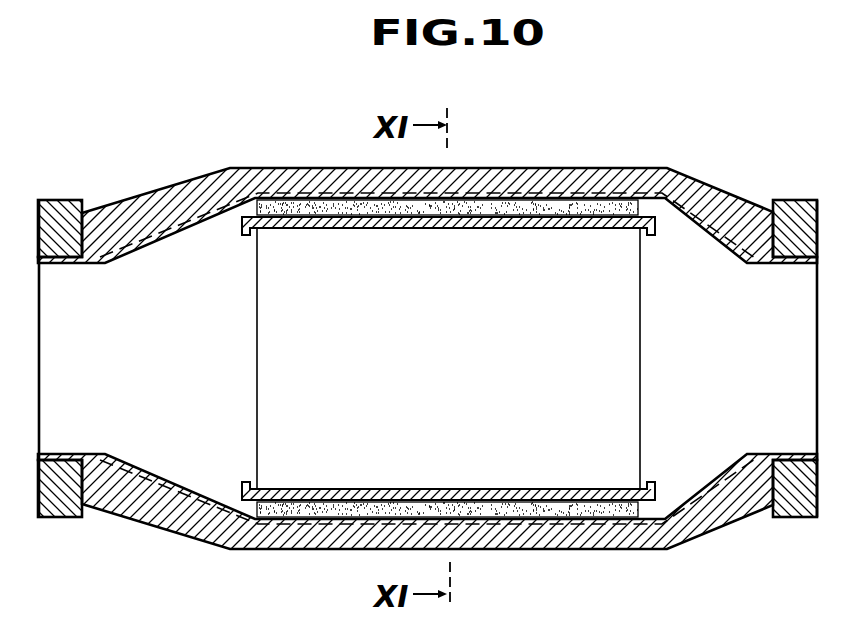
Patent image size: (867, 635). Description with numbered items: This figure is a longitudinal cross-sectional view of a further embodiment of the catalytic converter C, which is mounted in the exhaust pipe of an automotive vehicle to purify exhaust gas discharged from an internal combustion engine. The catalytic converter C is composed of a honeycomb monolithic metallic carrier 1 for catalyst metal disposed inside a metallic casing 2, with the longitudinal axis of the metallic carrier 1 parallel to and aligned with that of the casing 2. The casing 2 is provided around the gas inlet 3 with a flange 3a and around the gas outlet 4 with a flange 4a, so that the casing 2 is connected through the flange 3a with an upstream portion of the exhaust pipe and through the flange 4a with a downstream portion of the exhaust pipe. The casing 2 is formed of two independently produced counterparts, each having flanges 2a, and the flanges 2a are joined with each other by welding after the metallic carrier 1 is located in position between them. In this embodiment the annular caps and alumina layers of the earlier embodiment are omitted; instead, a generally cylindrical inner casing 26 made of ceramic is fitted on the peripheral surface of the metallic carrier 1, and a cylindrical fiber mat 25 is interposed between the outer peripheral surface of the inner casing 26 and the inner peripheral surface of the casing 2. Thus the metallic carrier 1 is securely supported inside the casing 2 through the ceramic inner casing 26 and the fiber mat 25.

The honeycomb monolithic metallic carrier 1 is at (505, 463).
The metallic casing 2 is at (138, 507).
The flanges of casing counterparts 2a is at (307, 537).
The gas inlet 3 is at (66, 296).
The flange 3a is at (72, 503).
The gas outlet 4 is at (790, 291).
The flange 4a is at (800, 498).
The cylindrical fiber mat 25 is at (507, 205).
The inner casing 26 is at (597, 212).
The catalytic converter C is at (677, 146).